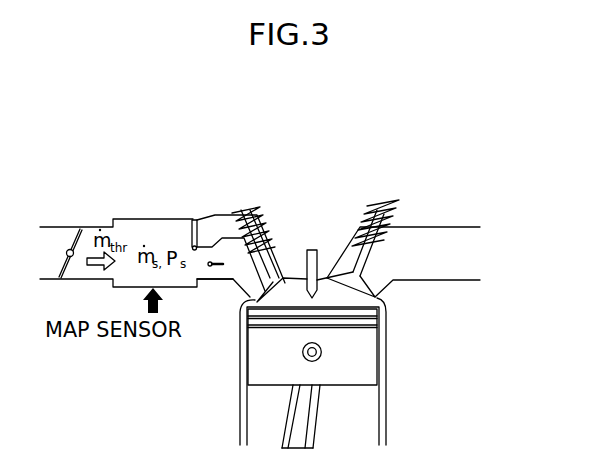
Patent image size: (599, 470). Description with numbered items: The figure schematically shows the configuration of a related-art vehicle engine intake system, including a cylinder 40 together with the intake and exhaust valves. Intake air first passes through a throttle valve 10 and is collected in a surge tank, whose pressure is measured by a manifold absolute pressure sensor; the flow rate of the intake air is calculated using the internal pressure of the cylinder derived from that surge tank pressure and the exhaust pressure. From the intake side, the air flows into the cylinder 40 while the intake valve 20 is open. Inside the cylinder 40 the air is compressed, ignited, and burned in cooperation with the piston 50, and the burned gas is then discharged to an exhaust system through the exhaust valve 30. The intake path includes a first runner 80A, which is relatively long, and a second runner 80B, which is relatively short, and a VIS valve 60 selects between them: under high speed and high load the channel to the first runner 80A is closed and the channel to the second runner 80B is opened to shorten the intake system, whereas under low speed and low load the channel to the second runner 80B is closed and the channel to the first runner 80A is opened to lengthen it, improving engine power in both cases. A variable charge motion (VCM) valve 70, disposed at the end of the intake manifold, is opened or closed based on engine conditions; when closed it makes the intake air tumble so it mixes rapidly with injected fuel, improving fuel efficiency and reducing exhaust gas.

The throttle valve 10 is at (72, 242).
The intake valve 20 is at (290, 264).
The exhaust valve 30 is at (397, 210).
The cylinder 40 is at (238, 397).
The piston 50 is at (377, 347).
The VIS valve 60 is at (193, 234).
The variable charge motion (VCM) valve 70 is at (210, 261).
The first runner 80A is at (221, 216).
The second runner 80B is at (215, 280).